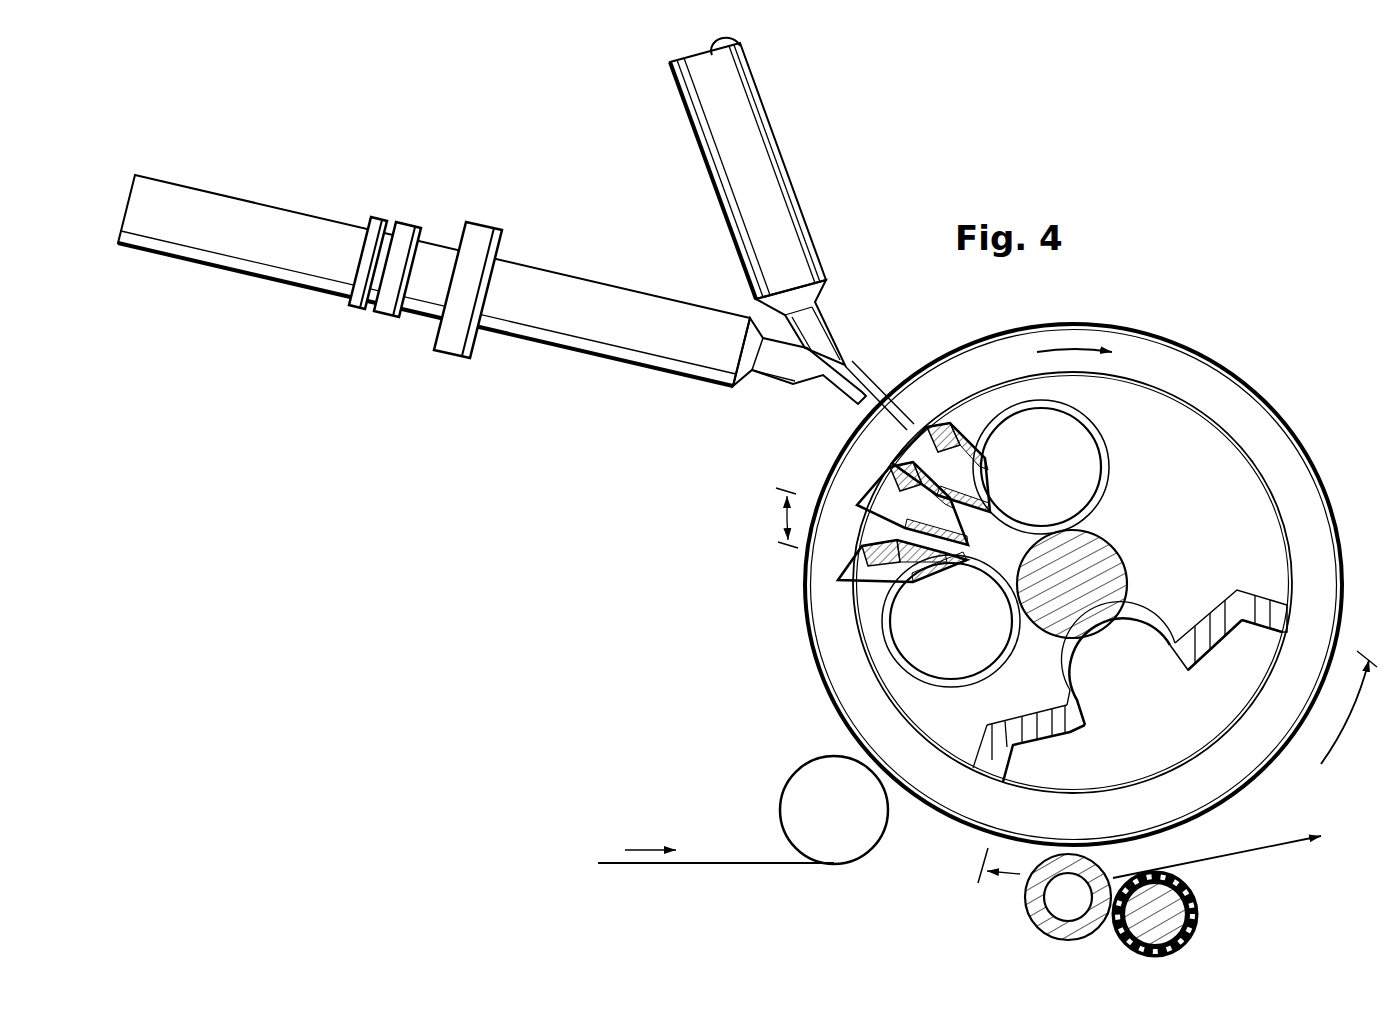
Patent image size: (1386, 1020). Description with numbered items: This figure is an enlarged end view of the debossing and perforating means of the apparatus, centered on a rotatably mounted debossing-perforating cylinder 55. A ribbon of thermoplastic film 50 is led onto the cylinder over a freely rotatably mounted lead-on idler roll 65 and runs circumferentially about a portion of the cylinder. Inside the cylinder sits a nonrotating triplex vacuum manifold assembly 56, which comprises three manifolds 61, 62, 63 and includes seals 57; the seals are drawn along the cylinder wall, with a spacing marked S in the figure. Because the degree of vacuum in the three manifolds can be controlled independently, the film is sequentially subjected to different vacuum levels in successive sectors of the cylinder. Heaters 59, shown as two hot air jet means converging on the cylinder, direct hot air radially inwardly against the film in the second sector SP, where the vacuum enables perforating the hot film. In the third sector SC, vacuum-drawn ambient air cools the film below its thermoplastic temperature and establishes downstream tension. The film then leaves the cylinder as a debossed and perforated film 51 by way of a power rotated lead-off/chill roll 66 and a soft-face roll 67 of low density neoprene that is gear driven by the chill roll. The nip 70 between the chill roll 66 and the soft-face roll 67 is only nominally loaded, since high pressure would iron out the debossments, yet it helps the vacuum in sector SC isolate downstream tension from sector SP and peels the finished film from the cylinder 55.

The heaters 59 is at (606, 325).
The second sector SP is at (815, 427).
The seals 57 is at (927, 422).
The nozzle spacing S is at (777, 518).
The debossing-perforating cylinder 55 is at (1303, 470).
The third sector SC is at (1329, 724).
The manifold 62 is at (1108, 467).
The manifold 61 is at (990, 675).
The triplex vacuum manifold assembly 56 is at (1137, 543).
The manifold 63 is at (1177, 665).
The lead-on idler roll 65 is at (844, 808).
The thermoplastic film 50 is at (702, 864).
The lead-off/chill roll 66 is at (1028, 902).
The nip 70 is at (1122, 882).
The soft-face roll 67 is at (1188, 892).
The debossed and perforated film 51 is at (1243, 851).